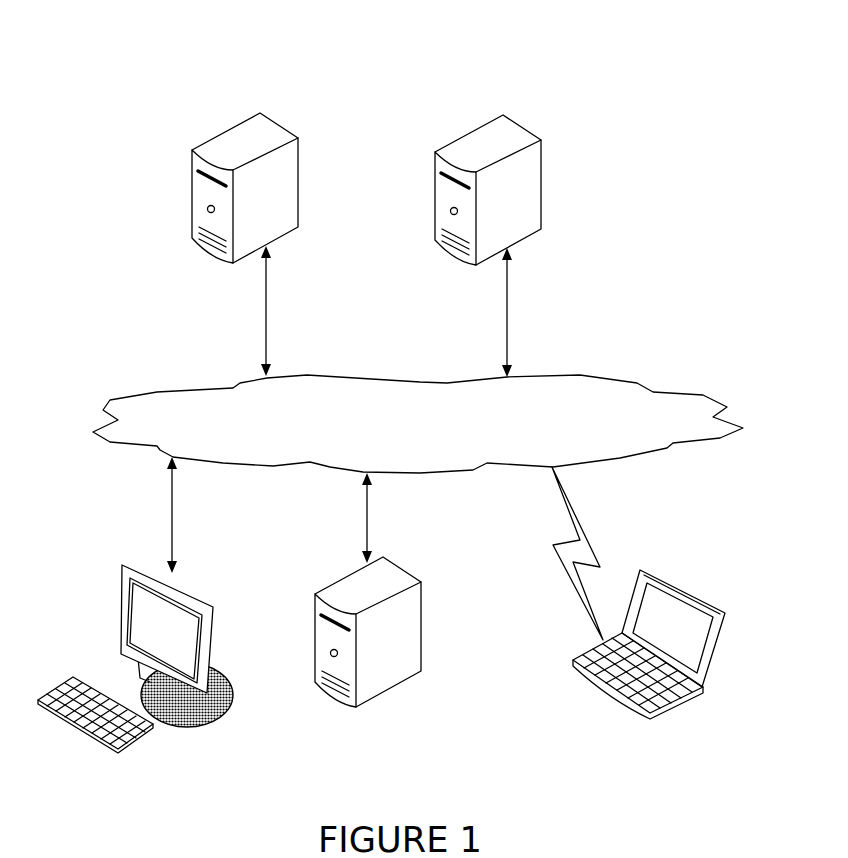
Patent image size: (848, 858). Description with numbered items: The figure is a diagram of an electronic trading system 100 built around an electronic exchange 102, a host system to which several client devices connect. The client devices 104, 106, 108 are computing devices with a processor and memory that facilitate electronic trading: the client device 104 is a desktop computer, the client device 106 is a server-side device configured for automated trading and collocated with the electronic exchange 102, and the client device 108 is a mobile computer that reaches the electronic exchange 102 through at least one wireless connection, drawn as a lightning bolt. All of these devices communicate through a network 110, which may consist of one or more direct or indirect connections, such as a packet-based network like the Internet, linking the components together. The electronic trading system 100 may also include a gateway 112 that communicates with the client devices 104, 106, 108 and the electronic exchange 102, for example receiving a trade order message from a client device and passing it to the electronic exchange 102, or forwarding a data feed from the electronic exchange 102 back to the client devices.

The electronic trading system 100 is at (172, 72).
The electronic exchange 102 is at (278, 122).
The client device 104 is at (193, 590).
The client device 106 is at (410, 573).
The client device 108 is at (690, 587).
The network 110 is at (434, 435).
The gateway 112 is at (523, 122).